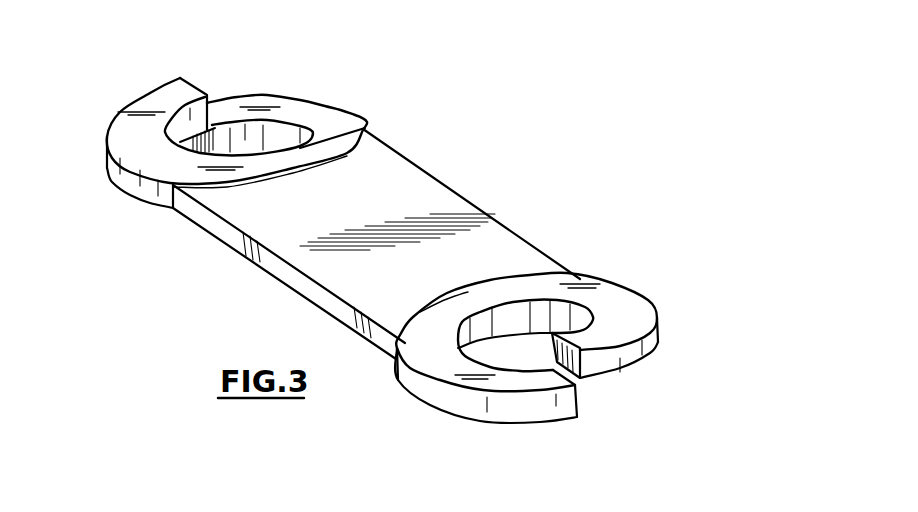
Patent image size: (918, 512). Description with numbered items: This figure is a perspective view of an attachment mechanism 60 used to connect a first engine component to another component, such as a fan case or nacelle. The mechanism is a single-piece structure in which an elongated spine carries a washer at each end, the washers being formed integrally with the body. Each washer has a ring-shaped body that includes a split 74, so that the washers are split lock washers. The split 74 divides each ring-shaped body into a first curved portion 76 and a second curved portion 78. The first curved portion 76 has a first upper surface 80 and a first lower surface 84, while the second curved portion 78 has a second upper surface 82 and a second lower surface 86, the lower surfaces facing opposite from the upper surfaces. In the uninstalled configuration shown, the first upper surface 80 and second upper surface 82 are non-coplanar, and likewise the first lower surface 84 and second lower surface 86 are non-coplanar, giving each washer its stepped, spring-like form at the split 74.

The attachment mechanism 60 is at (688, 165).
The split 74 is at (215, 84).
The first curved portion 76 is at (366, 101).
The second curved portion 78 is at (143, 185).
The first upper surface 80 is at (278, 103).
The second upper surface 82 is at (123, 125).
The first lower surface 84 is at (263, 155).
The second lower surface 86 is at (120, 187).